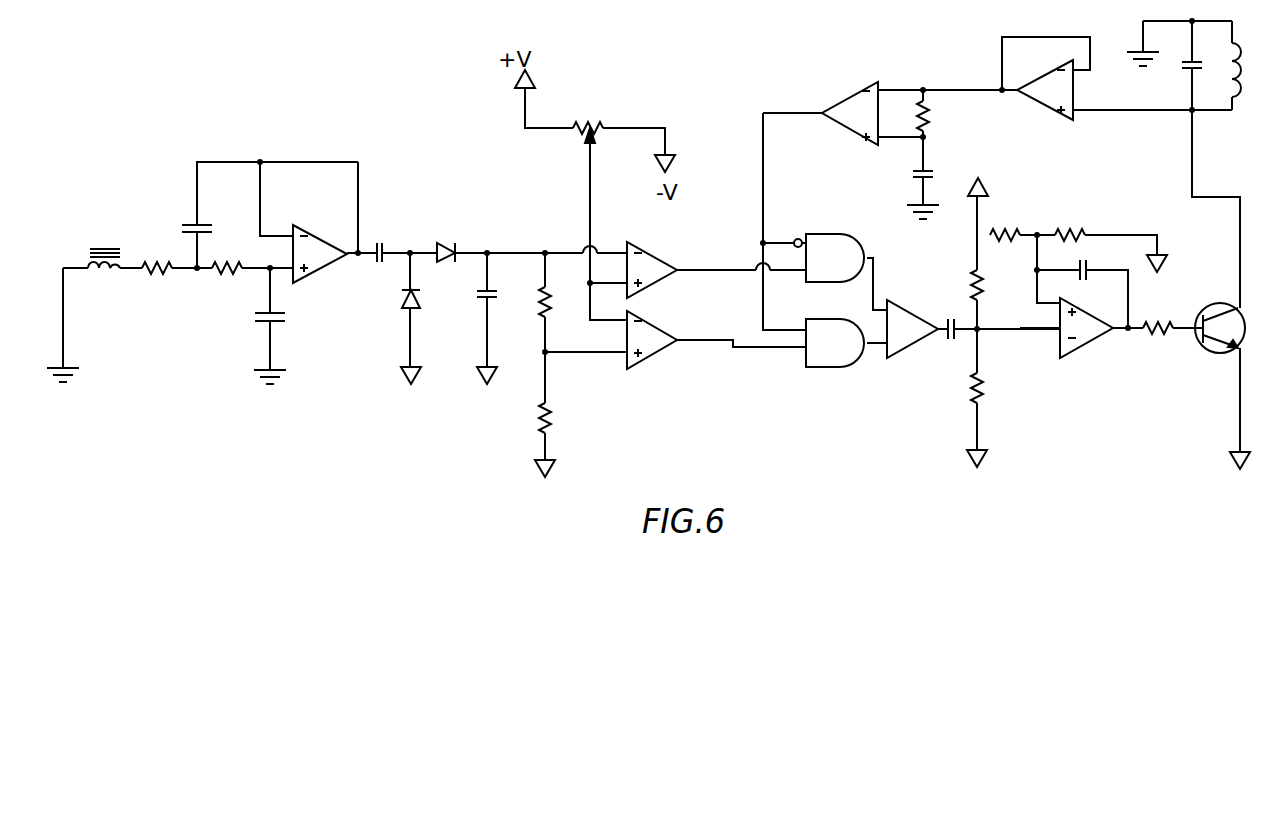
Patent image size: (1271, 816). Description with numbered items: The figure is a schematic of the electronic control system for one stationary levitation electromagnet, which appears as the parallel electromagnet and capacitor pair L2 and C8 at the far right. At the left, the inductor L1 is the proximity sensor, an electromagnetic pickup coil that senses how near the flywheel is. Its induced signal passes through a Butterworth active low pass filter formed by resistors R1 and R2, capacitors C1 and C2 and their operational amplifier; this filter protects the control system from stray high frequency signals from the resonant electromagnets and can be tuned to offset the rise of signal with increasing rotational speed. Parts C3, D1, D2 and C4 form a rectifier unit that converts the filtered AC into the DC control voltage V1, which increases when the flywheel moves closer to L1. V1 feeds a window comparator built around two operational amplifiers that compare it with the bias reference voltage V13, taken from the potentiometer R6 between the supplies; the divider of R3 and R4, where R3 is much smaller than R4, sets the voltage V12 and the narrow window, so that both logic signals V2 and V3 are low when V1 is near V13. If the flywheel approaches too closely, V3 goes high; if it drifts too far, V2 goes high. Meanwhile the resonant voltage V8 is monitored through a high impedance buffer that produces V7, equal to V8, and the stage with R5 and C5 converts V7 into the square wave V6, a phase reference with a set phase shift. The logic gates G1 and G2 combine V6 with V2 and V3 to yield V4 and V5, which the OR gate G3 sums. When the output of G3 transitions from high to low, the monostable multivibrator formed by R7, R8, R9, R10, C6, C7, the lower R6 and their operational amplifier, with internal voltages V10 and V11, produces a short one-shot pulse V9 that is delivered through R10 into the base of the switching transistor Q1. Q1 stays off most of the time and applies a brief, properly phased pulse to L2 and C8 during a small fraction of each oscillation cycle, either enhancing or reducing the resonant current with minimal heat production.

The inductor L1 is at (103, 281).
The resistor R1 is at (157, 288).
The resistor R2 is at (227, 288).
The capacitor C1 is at (211, 225).
The capacitor C2 is at (286, 325).
The capacitor C3 is at (387, 240).
The diode D2 is at (445, 239).
The diode D1 is at (423, 318).
The capacitor C4 is at (494, 257).
The resistor R3 is at (560, 298).
The resistor R4 is at (560, 415).
The resistor R6 is at (796, 240).
The DC control voltage V1 is at (522, 253).
The bias reference voltage V13 is at (596, 156).
The logic control signal V2 is at (696, 266).
The logic control signal V3 is at (704, 342).
The comparator voltage V12 is at (572, 353).
The logic gate G1 is at (818, 283).
The logic gate G2 is at (830, 372).
The OR logic gate G3 is at (925, 344).
The logic gate output voltage V4 is at (881, 250).
The logic gate output voltage V5 is at (871, 347).
The square wave phase reference voltage V6 is at (790, 113).
The buffered voltage V7 is at (945, 90).
The resistor R5 is at (943, 114).
The capacitor C5 is at (905, 170).
The capacitor C6 is at (942, 305).
The resistor R7 is at (991, 278).
The resistor R8 is at (1005, 216).
The resistor R9 is at (1070, 213).
The capacitor C7 is at (1095, 284).
The one-shot output voltage V9 is at (1128, 305).
The multivibrator input voltage V10 is at (1037, 282).
The multivibrator input voltage V11 is at (1040, 334).
The resistor R10 is at (1151, 350).
The switching transistor Q1 is at (1220, 349).
The resonant circuit voltage V8 is at (1103, 110).
The capacitor C8 is at (1177, 75).
The electromagnet L2 is at (1247, 67).